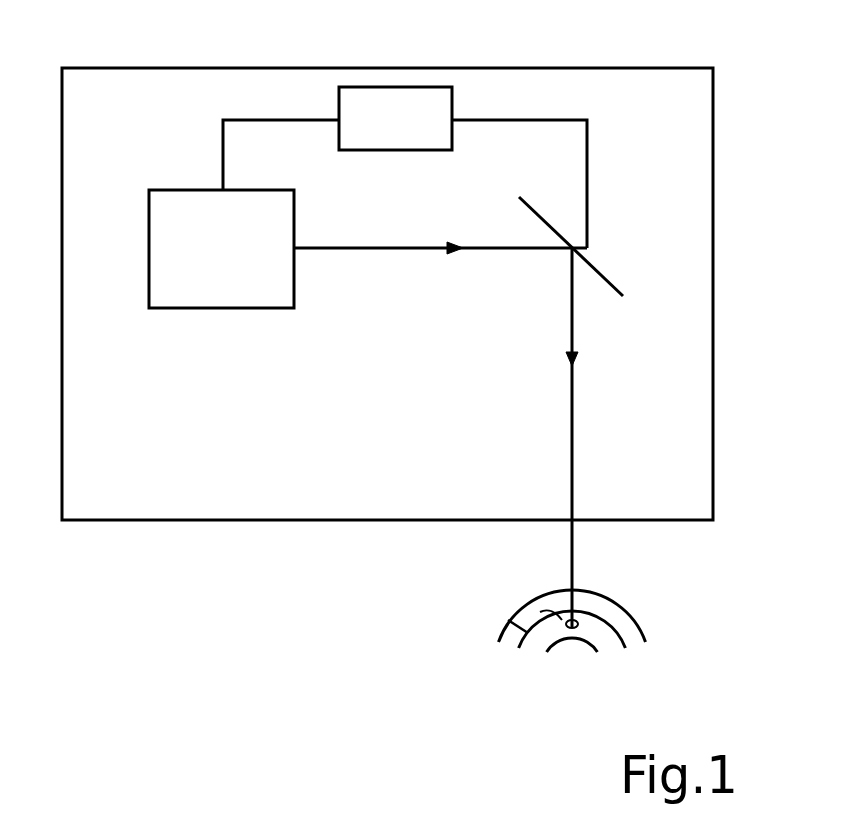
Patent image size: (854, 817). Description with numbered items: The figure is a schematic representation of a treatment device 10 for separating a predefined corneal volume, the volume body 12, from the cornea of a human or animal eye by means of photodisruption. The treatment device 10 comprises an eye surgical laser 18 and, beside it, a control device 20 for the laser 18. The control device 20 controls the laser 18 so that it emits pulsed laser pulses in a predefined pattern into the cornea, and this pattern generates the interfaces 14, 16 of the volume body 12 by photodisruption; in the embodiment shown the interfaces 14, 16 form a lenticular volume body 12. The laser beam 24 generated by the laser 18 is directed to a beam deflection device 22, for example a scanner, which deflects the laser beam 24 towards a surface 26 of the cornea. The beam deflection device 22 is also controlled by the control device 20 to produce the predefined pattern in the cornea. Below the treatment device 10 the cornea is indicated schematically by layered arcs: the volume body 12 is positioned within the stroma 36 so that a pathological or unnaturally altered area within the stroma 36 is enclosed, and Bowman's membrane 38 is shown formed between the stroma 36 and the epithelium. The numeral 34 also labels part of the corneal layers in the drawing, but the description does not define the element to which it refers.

The treatment device 10 is at (578, 68).
The volume body 12 is at (572, 632).
The interface 14 is at (543, 652).
The interface 16 is at (565, 612).
The eye surgical laser 18 is at (238, 267).
The control device 20 is at (414, 134).
The beam deflection device 22 is at (601, 270).
The laser beam 24 is at (408, 248).
The surface of the cornea 26 is at (597, 623).
The outer layer right portion 34 is at (605, 623).
The stroma 36 is at (612, 648).
The Bowman's membrane 38 is at (510, 623).